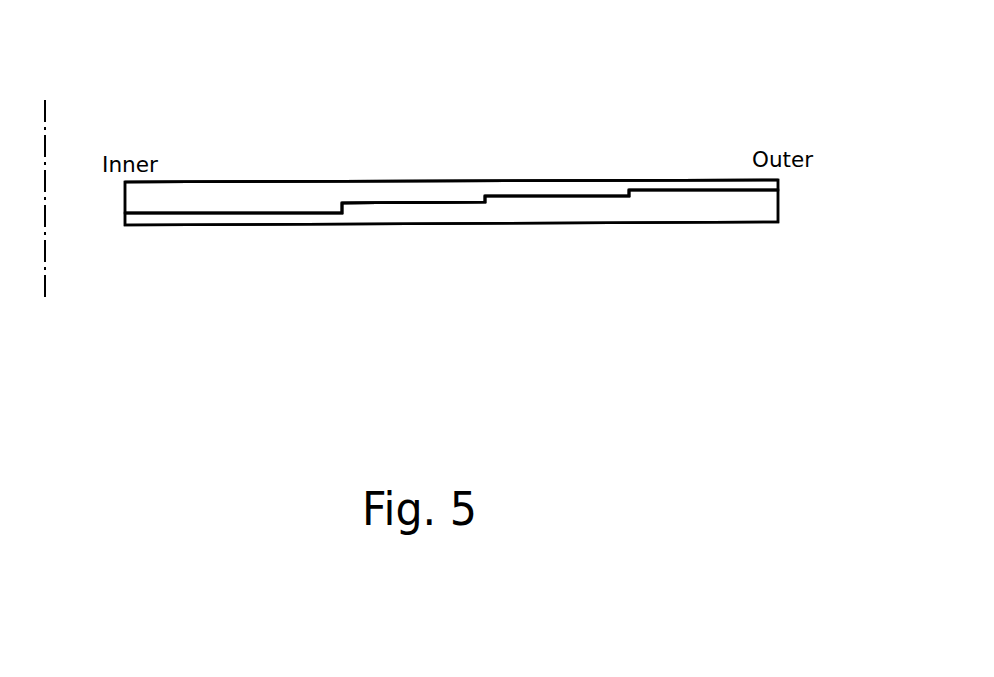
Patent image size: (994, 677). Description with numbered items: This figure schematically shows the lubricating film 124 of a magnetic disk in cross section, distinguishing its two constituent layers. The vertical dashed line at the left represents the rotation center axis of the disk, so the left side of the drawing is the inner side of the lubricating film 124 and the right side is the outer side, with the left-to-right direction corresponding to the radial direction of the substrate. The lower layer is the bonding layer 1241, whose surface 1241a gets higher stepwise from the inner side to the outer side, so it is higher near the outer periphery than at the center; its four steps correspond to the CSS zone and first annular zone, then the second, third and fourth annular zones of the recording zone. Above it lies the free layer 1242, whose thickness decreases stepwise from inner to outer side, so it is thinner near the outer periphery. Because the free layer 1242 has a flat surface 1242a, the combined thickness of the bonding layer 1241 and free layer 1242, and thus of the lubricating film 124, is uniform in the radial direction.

The lubricating film 124 is at (654, 82).
The bonding layer 1241 is at (770, 212).
The free layer 1242 is at (770, 184).
The surface of the bonding layer 1241a is at (213, 212).
The flat surface of the free layer 1242a is at (340, 182).